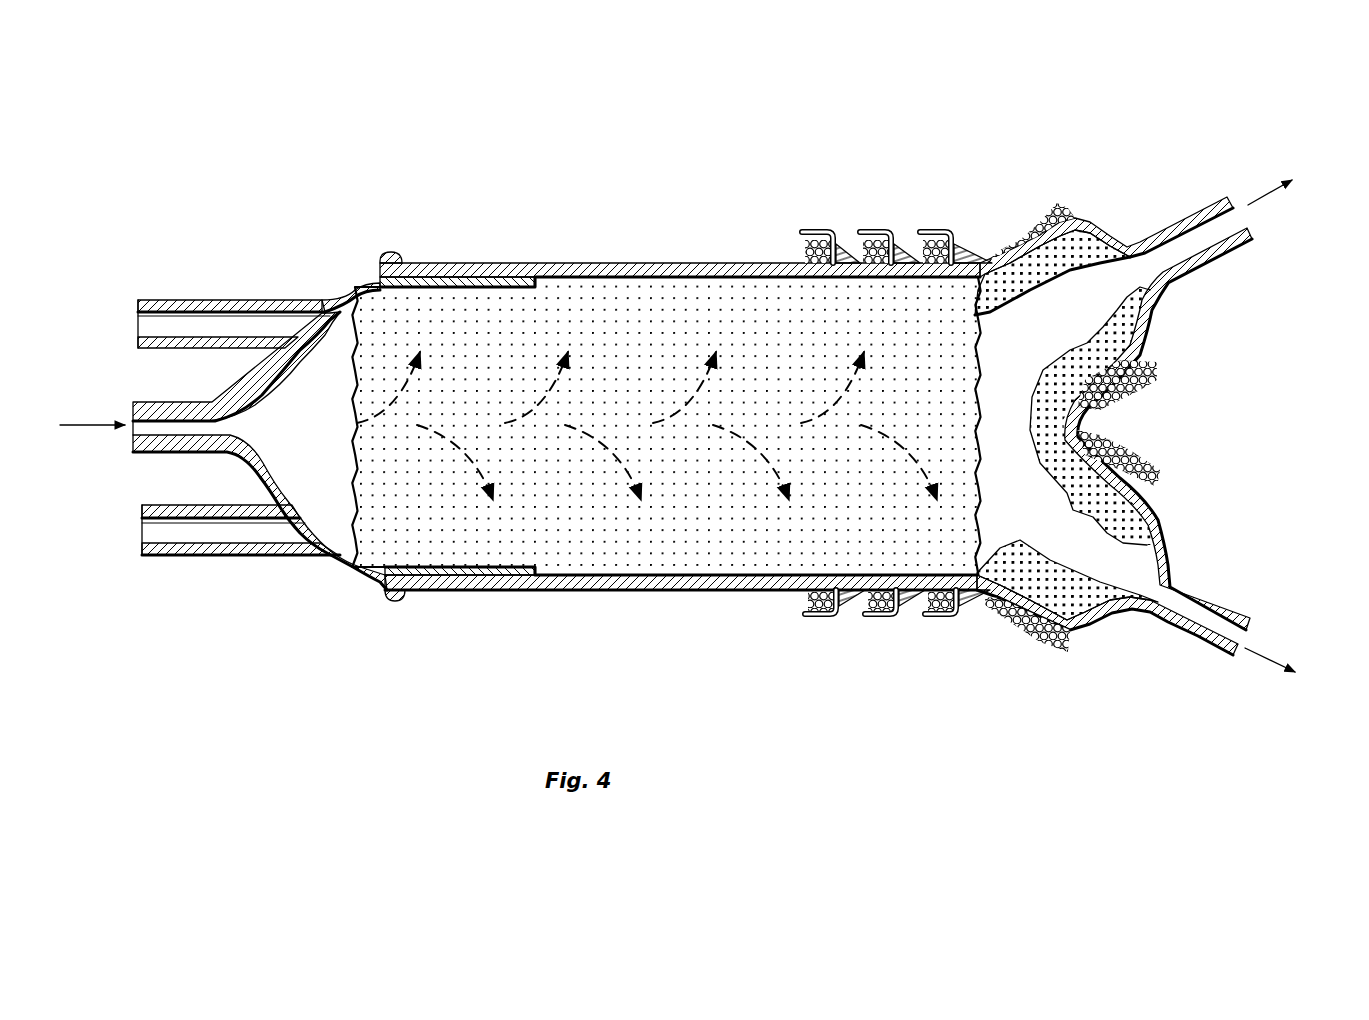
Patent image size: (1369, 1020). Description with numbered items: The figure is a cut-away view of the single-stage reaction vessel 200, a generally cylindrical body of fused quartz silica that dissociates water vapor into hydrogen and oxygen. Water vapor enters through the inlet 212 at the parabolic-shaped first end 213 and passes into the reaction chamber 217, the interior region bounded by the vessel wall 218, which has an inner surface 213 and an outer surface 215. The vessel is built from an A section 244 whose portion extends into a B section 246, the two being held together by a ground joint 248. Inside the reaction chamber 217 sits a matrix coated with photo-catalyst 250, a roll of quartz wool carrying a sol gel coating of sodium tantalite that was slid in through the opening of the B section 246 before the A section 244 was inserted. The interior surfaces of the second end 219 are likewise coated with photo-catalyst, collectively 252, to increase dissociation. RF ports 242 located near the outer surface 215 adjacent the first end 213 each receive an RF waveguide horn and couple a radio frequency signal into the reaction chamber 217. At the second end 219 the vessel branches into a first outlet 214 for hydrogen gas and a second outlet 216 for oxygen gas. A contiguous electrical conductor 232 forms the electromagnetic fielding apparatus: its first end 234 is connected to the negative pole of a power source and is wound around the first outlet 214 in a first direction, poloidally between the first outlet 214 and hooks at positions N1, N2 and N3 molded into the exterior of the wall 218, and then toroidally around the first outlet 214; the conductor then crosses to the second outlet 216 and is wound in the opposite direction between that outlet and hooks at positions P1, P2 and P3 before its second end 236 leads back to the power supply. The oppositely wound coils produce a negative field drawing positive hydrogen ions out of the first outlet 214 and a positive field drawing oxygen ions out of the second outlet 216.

The reaction vessel 200 is at (776, 187).
The inlet 212 is at (186, 398).
The first end 213 is at (555, 542).
The first outlet 214 is at (1176, 640).
The outer surface 215 is at (558, 262).
The second outlet 216 is at (1190, 237).
The reaction chamber 217 is at (715, 506).
The vessel wall 218 is at (656, 226).
The second end 219 is at (1197, 343).
The contiguous electrical conductor 232 is at (1117, 407).
The first end of the contiguous electrical conductor 234 is at (1016, 226).
The second end of the contiguous electrical conductor 236 is at (1013, 633).
The RF ports 242 is at (180, 304).
The A section 244 is at (333, 280).
The B section 246 is at (422, 261).
The ground joint 248 is at (371, 256).
The matrix coated with photo-catalyst 250 is at (353, 497).
The photo-catalyst coating 252 is at (1073, 258).
The position N1 is at (818, 230).
The position N2 is at (880, 230).
The position N3 is at (940, 230).
The position P1 is at (815, 620).
The position P2 is at (878, 620).
The position P3 is at (937, 620).